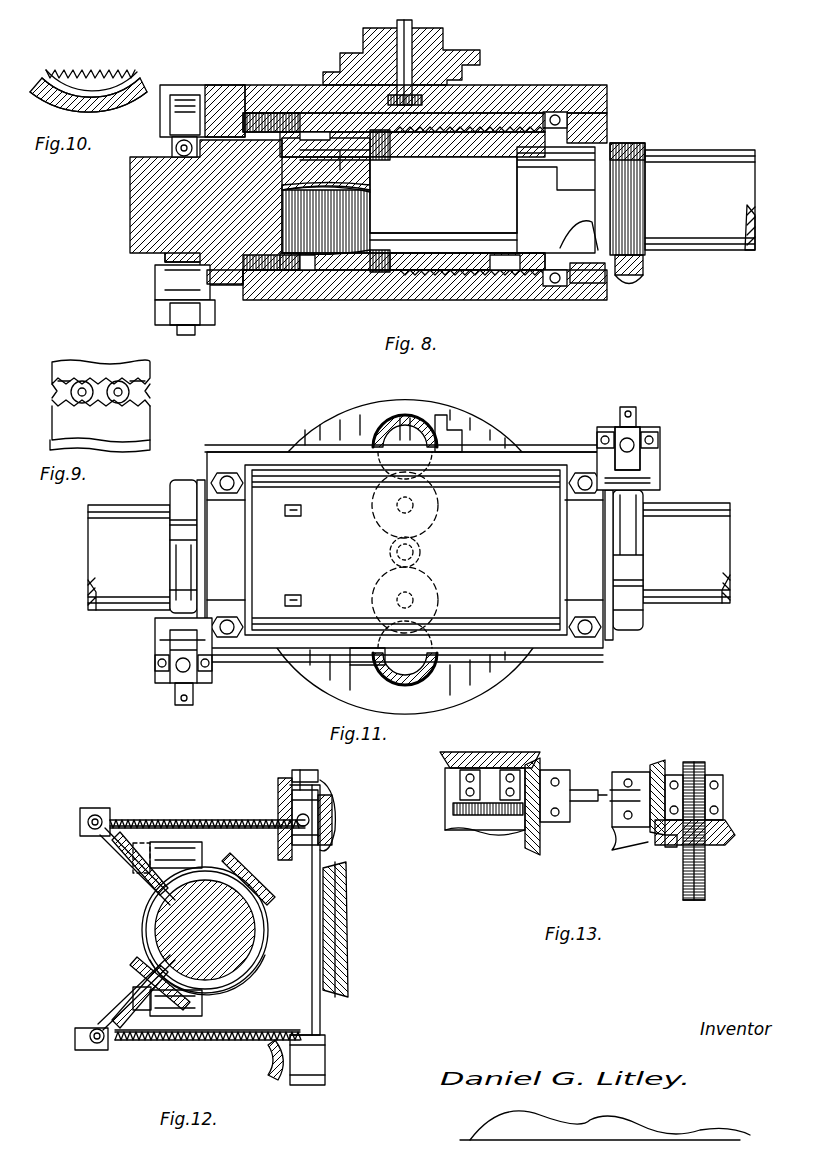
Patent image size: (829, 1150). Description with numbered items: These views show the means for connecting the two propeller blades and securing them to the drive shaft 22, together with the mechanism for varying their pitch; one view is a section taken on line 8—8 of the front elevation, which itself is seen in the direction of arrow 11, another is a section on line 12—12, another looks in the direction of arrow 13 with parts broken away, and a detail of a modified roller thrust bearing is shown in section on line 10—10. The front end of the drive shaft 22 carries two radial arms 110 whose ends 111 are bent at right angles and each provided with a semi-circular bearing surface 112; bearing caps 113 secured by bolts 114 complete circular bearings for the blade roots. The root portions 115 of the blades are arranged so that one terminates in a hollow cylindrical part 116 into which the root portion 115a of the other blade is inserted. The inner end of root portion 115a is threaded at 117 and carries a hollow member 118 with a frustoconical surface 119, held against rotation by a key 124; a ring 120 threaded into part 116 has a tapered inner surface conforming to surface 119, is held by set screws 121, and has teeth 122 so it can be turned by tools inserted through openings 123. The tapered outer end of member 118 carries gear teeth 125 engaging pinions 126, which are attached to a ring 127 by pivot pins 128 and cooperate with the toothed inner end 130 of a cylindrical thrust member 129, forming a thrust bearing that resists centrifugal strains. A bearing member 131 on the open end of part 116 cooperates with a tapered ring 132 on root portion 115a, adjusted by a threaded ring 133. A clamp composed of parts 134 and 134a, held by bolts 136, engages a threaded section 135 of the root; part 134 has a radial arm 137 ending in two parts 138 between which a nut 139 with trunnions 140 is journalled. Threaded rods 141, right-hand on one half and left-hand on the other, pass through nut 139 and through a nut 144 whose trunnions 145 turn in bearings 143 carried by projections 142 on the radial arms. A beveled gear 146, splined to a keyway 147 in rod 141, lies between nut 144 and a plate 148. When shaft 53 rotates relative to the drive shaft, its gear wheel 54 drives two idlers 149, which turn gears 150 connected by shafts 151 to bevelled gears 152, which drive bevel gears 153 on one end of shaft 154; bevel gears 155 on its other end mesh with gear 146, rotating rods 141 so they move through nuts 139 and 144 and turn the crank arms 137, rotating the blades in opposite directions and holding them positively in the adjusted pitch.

In FIG. 11, the section line 8— 8 is at (130, 552).
In FIG. 9, the section line 10— 10 is at (47, 395).
In FIG. 8, the arrow 11 is at (376, 313).
In FIG. 11, the section line 12— 12 is at (668, 385).
In FIG. 11, the arrow 13 is at (592, 404).
In FIG. 8, the drive shaft 22 is at (444, 32).
In FIG. 8, the shaft 53 is at (366, 36).
In FIG. 8, the gear wheel 54 is at (425, 100).
In FIG. 11, the gear wheel 54 is at (390, 553).
In FIG. 8, the radial arms 110 is at (302, 90).
In FIG. 12, the radial arms 110 is at (318, 940).
In FIG. 8, the ends of radial arms 111 is at (228, 118).
In FIG. 12, the ends of radial arms 111 is at (240, 1040).
In FIG. 8, the semi-circular bearing surface 112 is at (212, 100).
In FIG. 8, the bearing caps 113 is at (236, 286).
In FIG. 11, the bearing caps 113 is at (238, 555).
In FIG. 12, the bearing caps 113 is at (142, 930).
In FIG. 11, the bolts 114 is at (230, 474).
In FIG. 12, the bolts 114 is at (133, 992).
In FIG. 8, the root portions of propeller blades 115 is at (143, 228).
In FIG. 12, the root portions of propeller blades 115 is at (245, 935).
In FIG. 8, the root portion 115a is at (443, 195).
In FIG. 8, the hollow cylindrical part 116 is at (455, 282).
In FIG. 11, the hollow cylindrical part 116 is at (490, 630).
In FIG. 8, the threaded portion 117 is at (392, 190).
In FIG. 8, the hollow member 118 is at (375, 198).
In FIG. 9, the hollow member 118 is at (152, 426).
In FIG. 8, the frustoconical surface 119 is at (325, 290).
In FIG. 8, the ring 120 is at (300, 300).
In FIG. 11, the ring 120 is at (301, 511).
In FIG. 8, the set screws 121 is at (305, 125).
In FIG. 11, the teeth 122 is at (301, 600).
In FIG. 11, the openings 123 is at (305, 585).
In FIG. 8, the key 124 is at (360, 140).
In FIG. 9, the gear teeth 125 is at (152, 404).
In FIG. 8, the pinions 126 is at (395, 145).
In FIG. 10, the pinions 126 is at (80, 75).
In FIG. 9, the pinions 126 is at (101, 424).
In FIG. 10, the ring 127 is at (120, 66).
In FIG. 9, the ring 127 is at (55, 402).
In FIG. 8, the pivot pins 128 is at (168, 112).
In FIG. 10, the pivot pins 128 is at (123, 108).
In FIG. 9, the pivot pins 128 is at (120, 382).
In FIG. 8, the cylindrical thrust member 129 is at (490, 290).
In FIG. 9, the cylindrical thrust member 129 is at (68, 364).
In FIG. 8, the inner end of thrust member 130 is at (415, 240).
In FIG. 8, the bearing member 131 is at (550, 290).
In FIG. 8, the tapered ring 132 is at (556, 200).
In FIG. 8, the threaded ring 133 is at (570, 245).
In FIG. 8, the clamp 134 is at (170, 262).
In FIG. 11, the clamp 134 is at (175, 568).
In FIG. 12, the clamp 134 is at (150, 920).
In FIG. 12, the clamp part 134a is at (240, 975).
In FIG. 8, the threaded section 135 is at (645, 180).
In FIG. 12, the bolts 136 is at (133, 966).
In FIG. 8, the radial arm 137 is at (168, 288).
In FIG. 11, the radial arm 137 is at (168, 612).
In FIG. 12, the radial arm 137 is at (125, 875).
In FIG. 8, the arm end parts 138 is at (157, 312).
In FIG. 11, the arm end parts 138 is at (157, 648).
In FIG. 12, the arm end parts 138 is at (112, 850).
In FIG. 8, the nut 139 is at (193, 328).
In FIG. 11, the nut 139 is at (176, 697).
In FIG. 12, the nut 139 is at (92, 815).
In FIG. 12, the trunnions 140 is at (105, 815).
In FIG. 11, the threaded rods 141 is at (190, 680).
In FIG. 12, the threaded rods 141 is at (170, 818).
In FIG. 13, the threaded rods 141 is at (700, 890).
In FIG. 12, the projections 142 is at (332, 830).
In FIG. 13, the projections 142 is at (714, 775).
In FIG. 12, the bearings 143 is at (318, 790).
In FIG. 13, the bearings 143 is at (724, 796).
In FIG. 12, the nut 144 is at (318, 800).
In FIG. 13, the nut 144 is at (724, 815).
In FIG. 12, the trunnions 145 is at (310, 820).
In FIG. 8, the beveled gear 146 is at (175, 148).
In FIG. 11, the beveled gear 146 is at (160, 680).
In FIG. 12, the beveled gear 146 is at (292, 775).
In FIG. 13, the beveled gear 146 is at (733, 835).
In FIG. 13, the keyway 147 is at (692, 762).
In FIG. 11, the plate 148 is at (620, 420).
In FIG. 12, the plate 148 is at (280, 805).
In FIG. 13, the plate 148 is at (670, 847).
In FIG. 11, the idlers 149 is at (432, 520).
In FIG. 11, the gears 150 is at (380, 430).
In FIG. 13, the gears 150 is at (482, 815).
In FIG. 11, the shafts 151 is at (405, 418).
In FIG. 13, the shafts 151 is at (450, 788).
In FIG. 11, the bevelled gears 152 is at (392, 418).
In FIG. 12, the bevelled gears 152 is at (335, 850).
In FIG. 13, the bevelled gears 152 is at (510, 752).
In FIG. 11, the bevel gears 153 is at (450, 425).
In FIG. 12, the bevel gears 153 is at (338, 790).
In FIG. 13, the bevel gears 153 is at (532, 835).
In FIG. 11, the shaft 154 is at (525, 445).
In FIG. 13, the shaft 154 is at (585, 790).
In FIG. 12, the bevel gears 155 is at (308, 785).
In FIG. 13, the bevel gears 155 is at (655, 765).